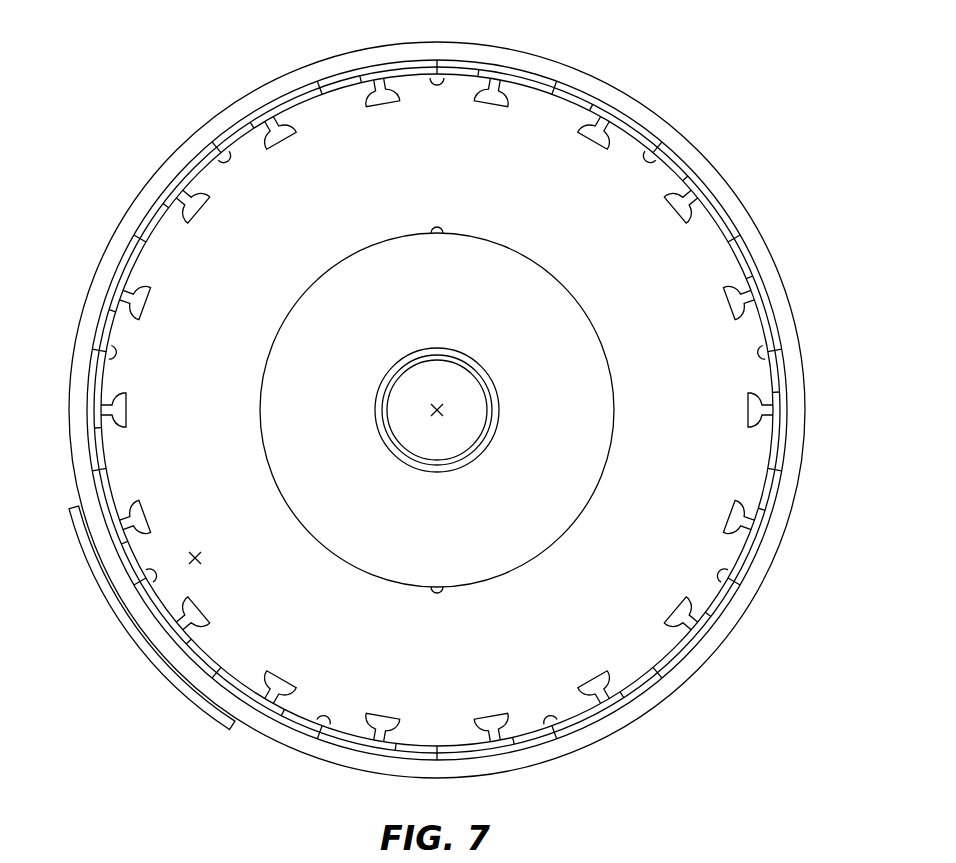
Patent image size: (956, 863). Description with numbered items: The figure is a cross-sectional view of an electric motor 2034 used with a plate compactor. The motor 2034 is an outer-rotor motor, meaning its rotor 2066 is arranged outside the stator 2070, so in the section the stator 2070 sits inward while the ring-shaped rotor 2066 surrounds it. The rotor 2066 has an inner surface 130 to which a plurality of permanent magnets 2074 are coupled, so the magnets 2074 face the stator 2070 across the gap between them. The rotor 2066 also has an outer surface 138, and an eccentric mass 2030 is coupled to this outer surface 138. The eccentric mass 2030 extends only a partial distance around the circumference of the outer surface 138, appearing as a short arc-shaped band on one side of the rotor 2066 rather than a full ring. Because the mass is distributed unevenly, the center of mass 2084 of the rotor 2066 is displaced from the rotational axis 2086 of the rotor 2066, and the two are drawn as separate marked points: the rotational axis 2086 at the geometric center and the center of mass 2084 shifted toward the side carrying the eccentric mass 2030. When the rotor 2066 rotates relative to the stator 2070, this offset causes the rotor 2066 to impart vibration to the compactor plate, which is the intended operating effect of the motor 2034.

The electric motor 2034 is at (168, 78).
The outer surface 138 is at (678, 128).
The rotational axis 2086 is at (437, 410).
The permanent magnets 2074 is at (710, 200).
The inner surface 130 is at (748, 248).
The rotor 2066 is at (587, 733).
The stator 2070 is at (620, 648).
The center of mass 2084 is at (188, 552).
The eccentric mass 2030 is at (118, 617).